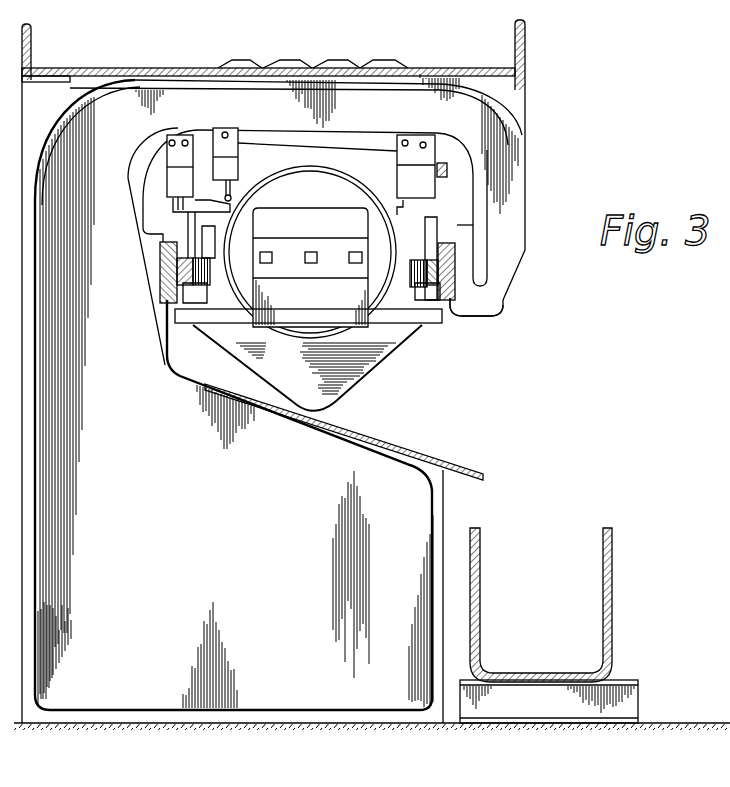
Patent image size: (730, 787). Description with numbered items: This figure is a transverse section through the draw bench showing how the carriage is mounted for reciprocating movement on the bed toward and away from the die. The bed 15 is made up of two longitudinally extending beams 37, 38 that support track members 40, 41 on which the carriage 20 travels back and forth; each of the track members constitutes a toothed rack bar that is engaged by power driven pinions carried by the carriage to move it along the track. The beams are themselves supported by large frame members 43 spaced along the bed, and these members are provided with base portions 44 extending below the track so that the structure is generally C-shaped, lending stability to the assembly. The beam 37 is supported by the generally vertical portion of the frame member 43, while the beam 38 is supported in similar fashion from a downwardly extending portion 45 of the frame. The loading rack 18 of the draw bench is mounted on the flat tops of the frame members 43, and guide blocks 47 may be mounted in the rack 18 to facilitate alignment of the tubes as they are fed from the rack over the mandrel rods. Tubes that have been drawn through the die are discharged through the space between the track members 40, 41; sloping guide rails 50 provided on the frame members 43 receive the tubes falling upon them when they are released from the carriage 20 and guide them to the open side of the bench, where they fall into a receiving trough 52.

The bed 15 is at (463, 203).
The loading rack 18 is at (523, 42).
The carriage 20 is at (375, 293).
The beam 37 is at (160, 247).
The beam 38 is at (453, 293).
The track member 40 is at (185, 272).
The track member 41 is at (440, 270).
The frame member 43 is at (83, 678).
The base portion 44 is at (400, 653).
The downwardly extending portion 45 is at (483, 152).
The guide block 47 is at (283, 66).
The sloping guide rail 50 is at (308, 423).
The receiving trough 52 is at (478, 592).